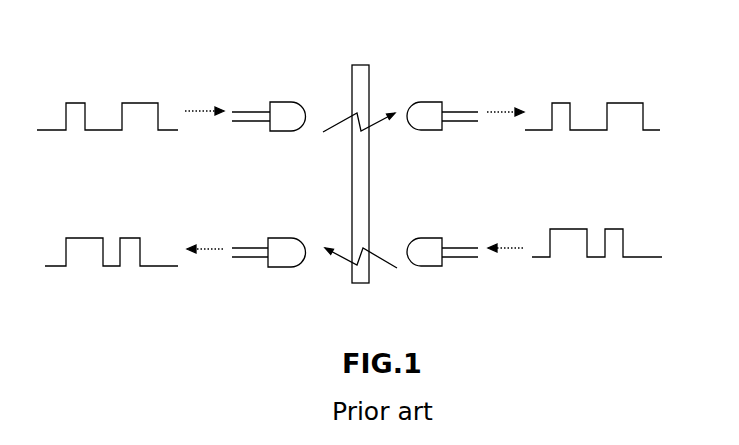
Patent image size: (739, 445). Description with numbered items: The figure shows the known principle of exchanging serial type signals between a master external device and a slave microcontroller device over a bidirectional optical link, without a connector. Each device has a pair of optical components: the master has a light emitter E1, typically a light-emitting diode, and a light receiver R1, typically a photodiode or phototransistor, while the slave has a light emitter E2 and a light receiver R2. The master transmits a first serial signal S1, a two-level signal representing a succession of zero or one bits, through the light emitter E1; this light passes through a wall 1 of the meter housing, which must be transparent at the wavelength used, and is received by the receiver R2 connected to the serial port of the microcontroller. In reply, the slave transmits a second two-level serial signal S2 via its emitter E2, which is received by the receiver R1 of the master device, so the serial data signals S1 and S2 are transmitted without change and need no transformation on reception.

The wall 1 is at (380, 166).
The first serial signal S1 is at (355, 115).
The second serial signal S2 is at (349, 248).
The light emitter E1 is at (266, 104).
The light emitter E2 is at (453, 237).
The light receiver R1 is at (266, 240).
The light receiver R2 is at (445, 101).